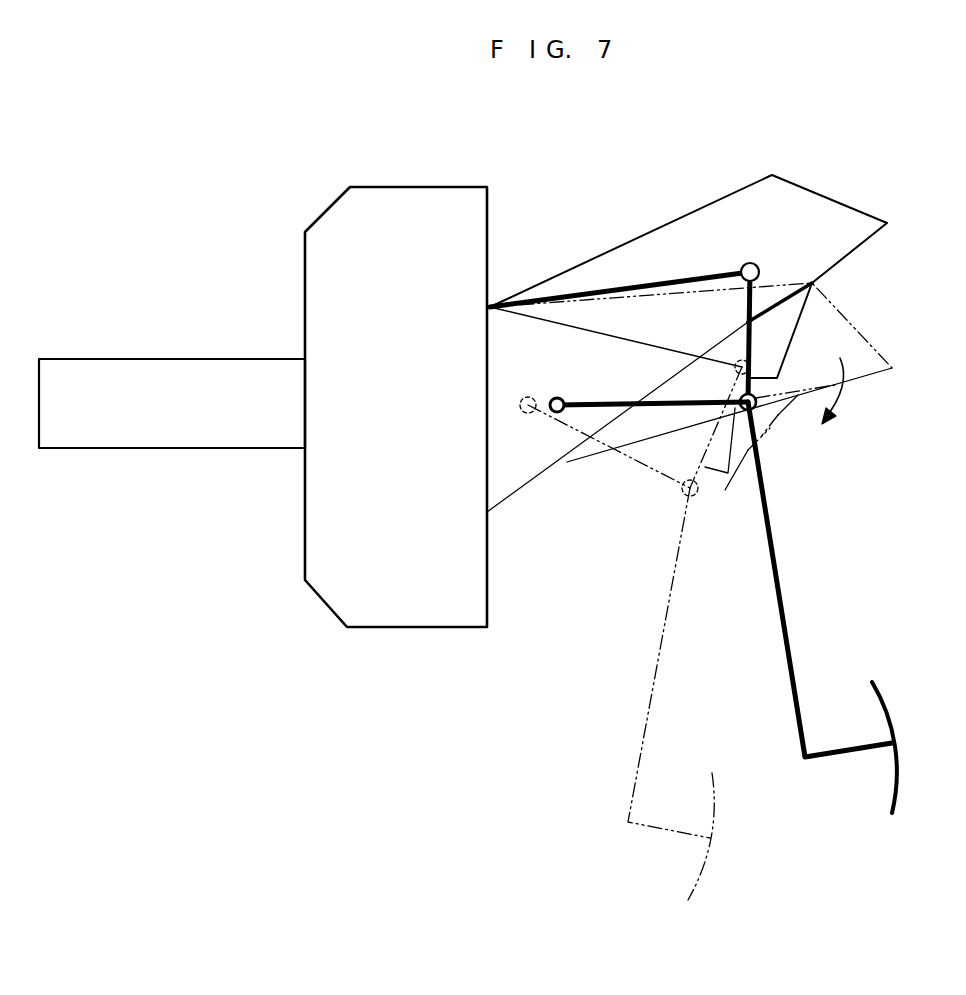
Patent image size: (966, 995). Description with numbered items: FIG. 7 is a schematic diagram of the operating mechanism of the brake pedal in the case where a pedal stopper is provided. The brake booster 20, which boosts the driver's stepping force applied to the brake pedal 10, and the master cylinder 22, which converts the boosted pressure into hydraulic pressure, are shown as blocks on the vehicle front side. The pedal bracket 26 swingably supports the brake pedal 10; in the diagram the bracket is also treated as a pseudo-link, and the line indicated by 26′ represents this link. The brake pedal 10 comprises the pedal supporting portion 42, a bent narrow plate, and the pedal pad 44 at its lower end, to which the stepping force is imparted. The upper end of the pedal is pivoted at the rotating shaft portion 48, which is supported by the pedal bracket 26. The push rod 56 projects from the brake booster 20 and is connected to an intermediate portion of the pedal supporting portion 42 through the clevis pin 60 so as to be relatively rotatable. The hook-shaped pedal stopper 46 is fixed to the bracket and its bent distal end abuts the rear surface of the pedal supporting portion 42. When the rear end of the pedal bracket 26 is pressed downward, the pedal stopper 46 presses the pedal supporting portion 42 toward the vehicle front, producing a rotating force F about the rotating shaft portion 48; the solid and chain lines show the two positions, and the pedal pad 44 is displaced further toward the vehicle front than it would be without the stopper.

The brake pedal 10 is at (782, 567).
The brake booster 20 is at (302, 580).
The master cylinder 22 is at (212, 448).
The pedal bracket 26 is at (850, 203).
The pseudo-link 26′ is at (680, 280).
The pedal supporting portion 42 is at (787, 635).
The pedal pad 44 is at (893, 712).
The pedal stopper 46 is at (793, 333).
The rotating shaft portion 48 is at (758, 265).
The push rod 56 is at (611, 402).
The clevis pin 60 is at (684, 495).
The rotating force F is at (840, 401).